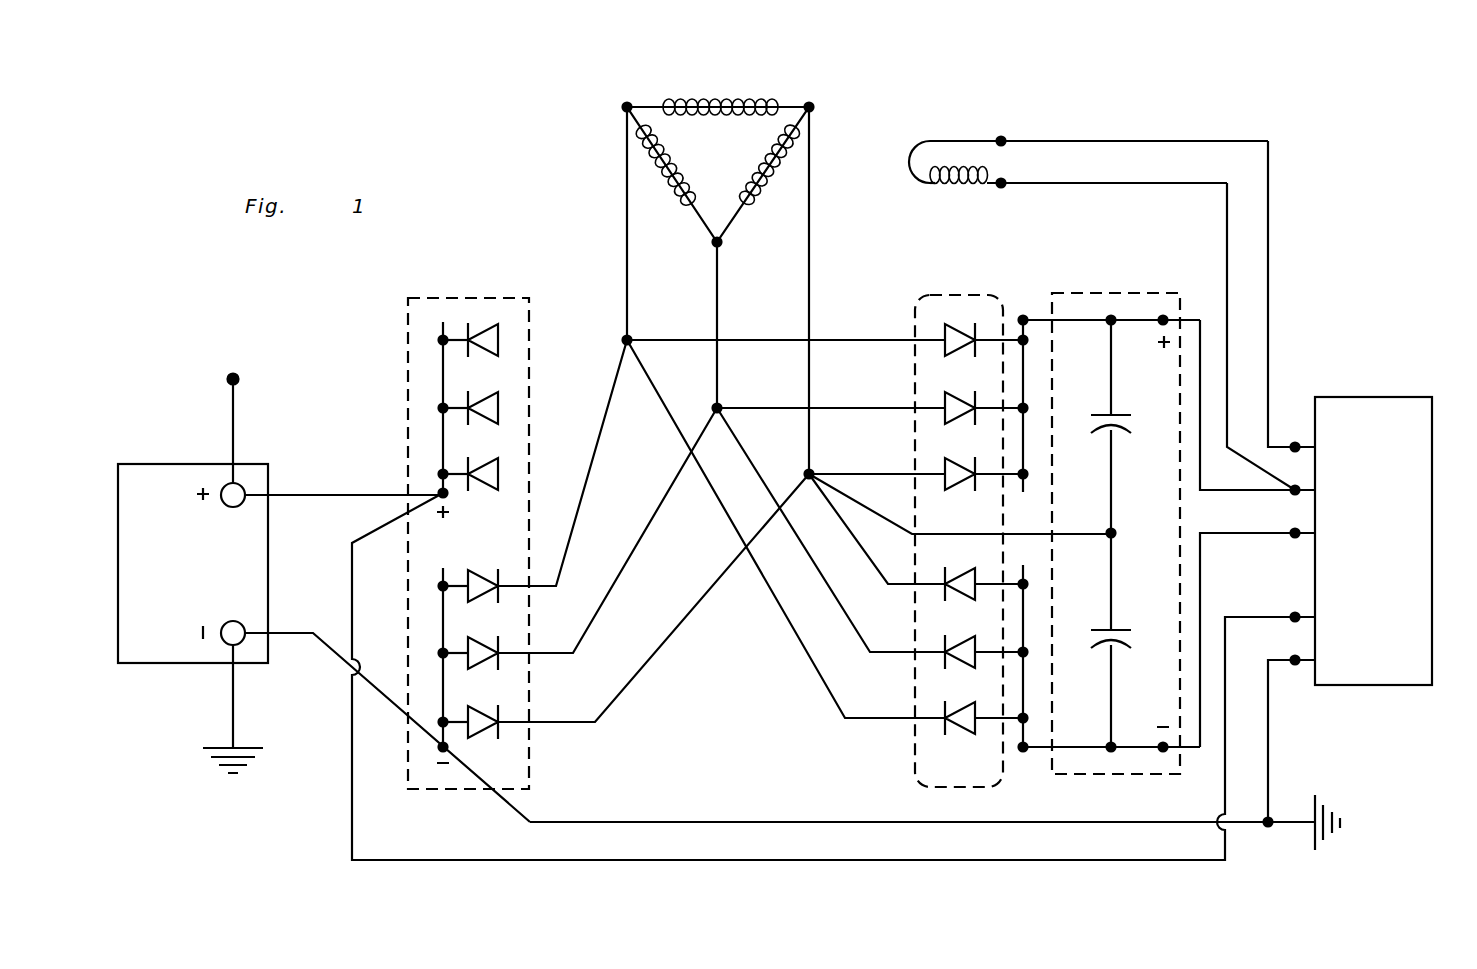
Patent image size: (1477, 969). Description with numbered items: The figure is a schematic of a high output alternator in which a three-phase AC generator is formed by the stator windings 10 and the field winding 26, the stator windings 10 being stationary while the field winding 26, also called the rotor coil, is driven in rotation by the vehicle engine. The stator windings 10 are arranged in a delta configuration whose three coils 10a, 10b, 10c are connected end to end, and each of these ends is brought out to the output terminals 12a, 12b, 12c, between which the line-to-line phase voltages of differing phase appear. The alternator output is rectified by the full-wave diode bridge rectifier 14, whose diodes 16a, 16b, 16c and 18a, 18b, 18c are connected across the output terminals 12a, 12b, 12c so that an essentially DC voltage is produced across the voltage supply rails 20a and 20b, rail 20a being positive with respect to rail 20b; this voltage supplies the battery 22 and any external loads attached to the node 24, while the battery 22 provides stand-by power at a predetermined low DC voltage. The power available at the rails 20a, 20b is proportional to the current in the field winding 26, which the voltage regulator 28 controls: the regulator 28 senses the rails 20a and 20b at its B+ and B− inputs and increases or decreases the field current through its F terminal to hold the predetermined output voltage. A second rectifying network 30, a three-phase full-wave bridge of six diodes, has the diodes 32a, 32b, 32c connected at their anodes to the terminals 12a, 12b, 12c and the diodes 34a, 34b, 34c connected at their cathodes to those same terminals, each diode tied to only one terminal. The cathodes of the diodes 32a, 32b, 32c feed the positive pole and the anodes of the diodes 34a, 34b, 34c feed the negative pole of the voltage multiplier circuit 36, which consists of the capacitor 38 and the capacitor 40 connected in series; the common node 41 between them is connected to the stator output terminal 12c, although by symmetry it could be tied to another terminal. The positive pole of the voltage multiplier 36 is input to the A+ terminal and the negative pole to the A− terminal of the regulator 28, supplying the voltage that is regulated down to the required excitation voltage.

The stator windings 10 is at (718, 157).
The stator winding coil 10a is at (716, 101).
The stator winding coil 10b is at (795, 240).
The stator winding coil 10c is at (680, 205).
The output terminal 12a is at (628, 340).
The output terminal 12b is at (718, 408).
The output terminal 12c is at (809, 474).
The full-wave diode bridge rectifier 14 is at (476, 522).
The diode 16a is at (500, 352).
The diode 16b is at (500, 420).
The diode 16c is at (500, 486).
The diode 18a is at (470, 600).
The diode 18b is at (470, 667).
The diode 18c is at (470, 736).
The positive voltage supply rail 20a is at (327, 494).
The negative voltage supply rail 20b is at (327, 648).
The battery 22 is at (183, 664).
The external load node 24 is at (240, 377).
The field winding 26 is at (962, 190).
The voltage regulator 28 is at (1395, 397).
The rectifying network 30 is at (971, 520).
The diode 32a is at (947, 354).
The diode 32b is at (947, 422).
The diode 32c is at (947, 488).
The diode 34a is at (977, 596).
The diode 34b is at (977, 664).
The diode 34c is at (977, 730).
The voltage multiplier circuit 36 is at (1111, 511).
The capacitor 38 is at (1124, 415).
The capacitor 40 is at (1124, 630).
The common node 41 is at (1114, 533).